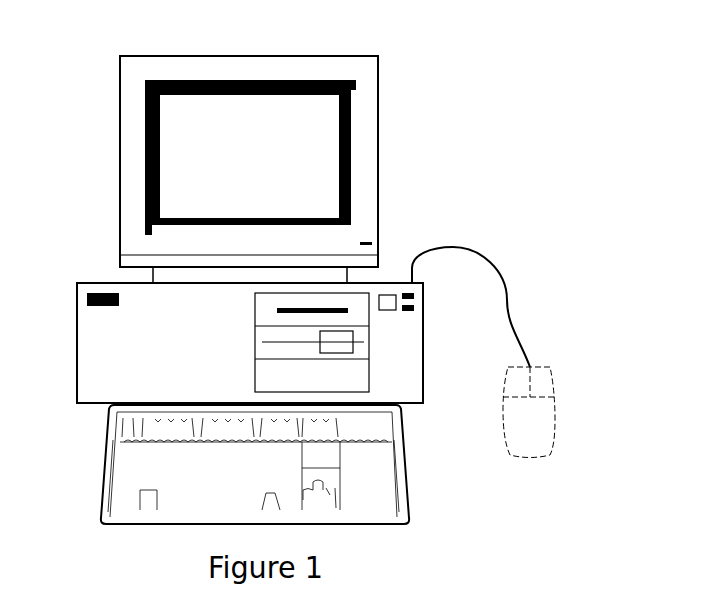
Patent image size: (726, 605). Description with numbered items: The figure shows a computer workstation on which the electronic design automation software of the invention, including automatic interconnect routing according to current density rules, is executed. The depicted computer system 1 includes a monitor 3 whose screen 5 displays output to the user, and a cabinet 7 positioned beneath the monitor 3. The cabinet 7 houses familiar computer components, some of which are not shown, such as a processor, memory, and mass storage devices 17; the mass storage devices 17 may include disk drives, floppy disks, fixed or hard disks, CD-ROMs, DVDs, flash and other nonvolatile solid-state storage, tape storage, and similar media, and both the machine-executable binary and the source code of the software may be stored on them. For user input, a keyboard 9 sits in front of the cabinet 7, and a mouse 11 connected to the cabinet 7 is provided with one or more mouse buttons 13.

The computer system 1 is at (392, 42).
The monitor 3 is at (380, 137).
The screen 5 is at (175, 148).
The cabinet 7 is at (102, 285).
The keyboard 9 is at (142, 524).
The mouse 11 is at (530, 447).
The mouse buttons 13 is at (542, 387).
The mass storage devices 17 is at (362, 298).